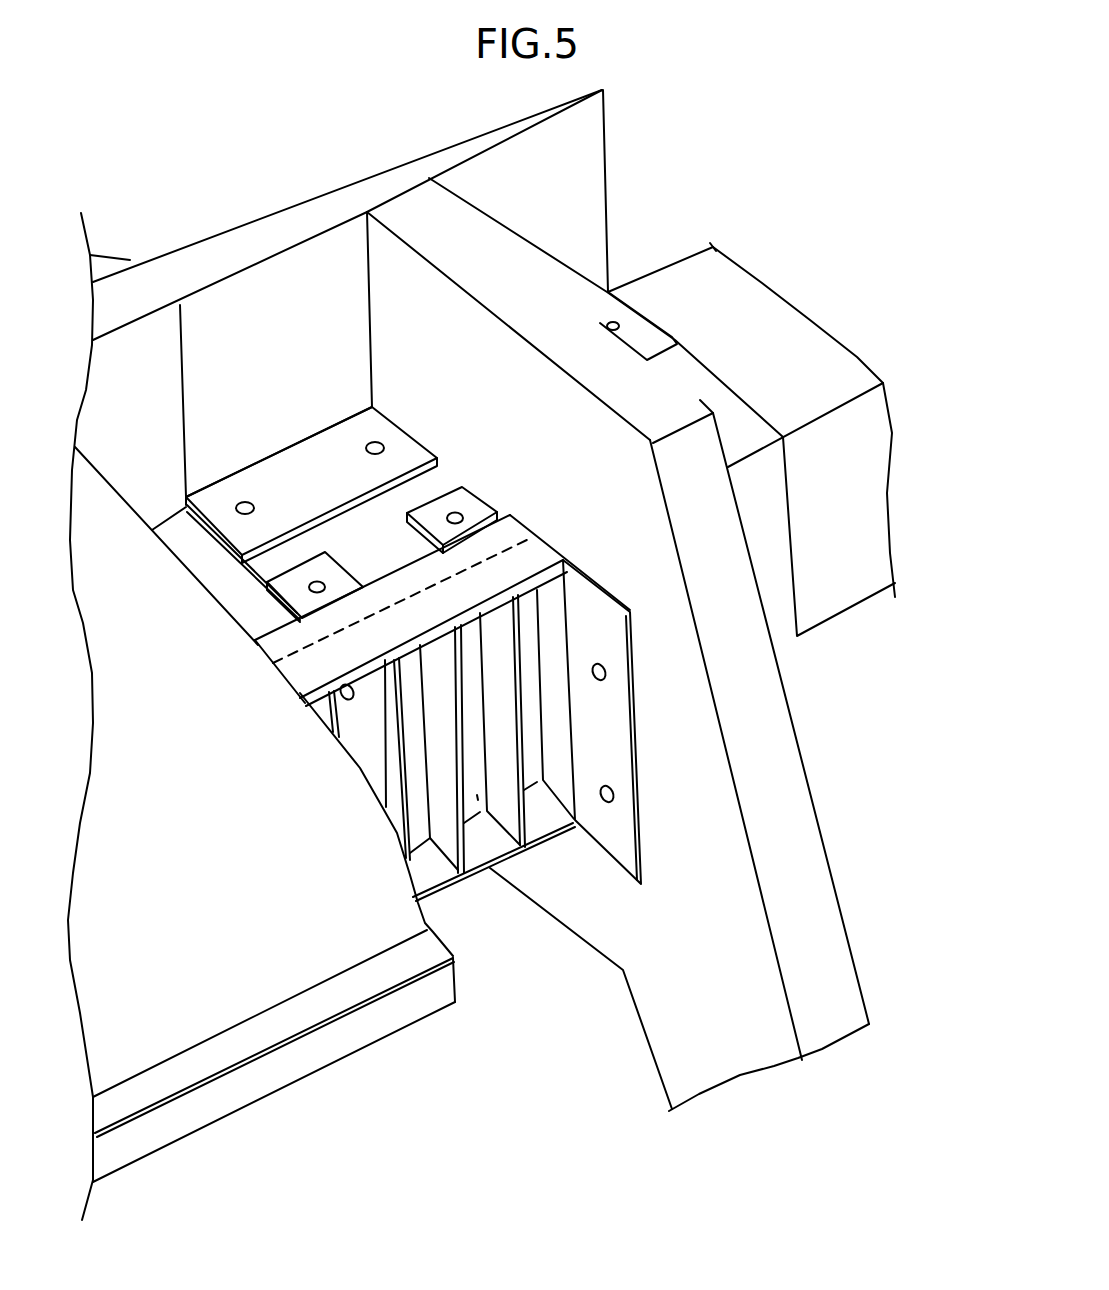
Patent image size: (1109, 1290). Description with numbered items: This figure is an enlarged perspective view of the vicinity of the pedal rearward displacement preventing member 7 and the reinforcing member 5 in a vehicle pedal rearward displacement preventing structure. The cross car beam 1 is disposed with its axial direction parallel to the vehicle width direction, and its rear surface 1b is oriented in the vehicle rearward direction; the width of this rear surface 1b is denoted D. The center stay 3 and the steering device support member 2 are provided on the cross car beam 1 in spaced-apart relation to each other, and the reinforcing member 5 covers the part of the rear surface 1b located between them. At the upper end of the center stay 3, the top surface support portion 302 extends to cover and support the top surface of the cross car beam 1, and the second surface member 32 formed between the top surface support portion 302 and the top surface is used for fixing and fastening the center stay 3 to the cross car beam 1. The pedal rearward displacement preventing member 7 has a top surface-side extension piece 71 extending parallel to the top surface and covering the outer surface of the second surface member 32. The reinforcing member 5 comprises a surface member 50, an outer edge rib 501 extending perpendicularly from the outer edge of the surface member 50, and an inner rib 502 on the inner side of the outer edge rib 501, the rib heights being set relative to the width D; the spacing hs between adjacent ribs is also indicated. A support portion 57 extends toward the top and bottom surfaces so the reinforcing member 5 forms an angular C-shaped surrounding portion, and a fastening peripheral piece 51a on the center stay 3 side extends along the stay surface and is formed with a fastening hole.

The cross car beam 1 is at (793, 439).
The rear surface 1b is at (849, 524).
The steering device support member 2 is at (192, 789).
The center stay 3 is at (634, 575).
The top surface support portion 302 is at (522, 282).
The reinforcing member 5 is at (524, 823).
The pedal rearward displacement preventing member 7 is at (270, 196).
The second surface member 32 is at (392, 554).
The surface member 50 is at (477, 795).
The fastening peripheral piece 51a is at (640, 752).
The support portion 57 is at (280, 647).
The top surface-side extension piece 71 is at (327, 489).
The outer edge rib 501 is at (510, 864).
The inner rib 502 is at (517, 740).
The width of the rear surface D is at (977, 338).
The rib spacing dimension hs is at (513, 720).